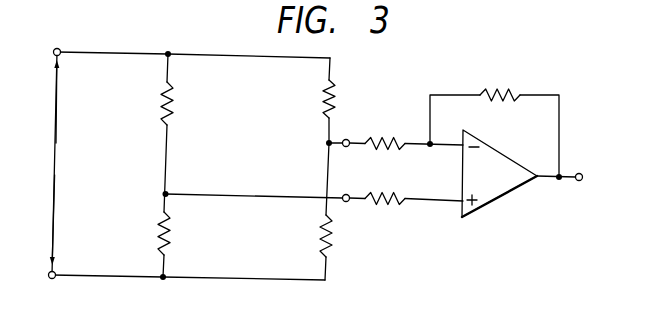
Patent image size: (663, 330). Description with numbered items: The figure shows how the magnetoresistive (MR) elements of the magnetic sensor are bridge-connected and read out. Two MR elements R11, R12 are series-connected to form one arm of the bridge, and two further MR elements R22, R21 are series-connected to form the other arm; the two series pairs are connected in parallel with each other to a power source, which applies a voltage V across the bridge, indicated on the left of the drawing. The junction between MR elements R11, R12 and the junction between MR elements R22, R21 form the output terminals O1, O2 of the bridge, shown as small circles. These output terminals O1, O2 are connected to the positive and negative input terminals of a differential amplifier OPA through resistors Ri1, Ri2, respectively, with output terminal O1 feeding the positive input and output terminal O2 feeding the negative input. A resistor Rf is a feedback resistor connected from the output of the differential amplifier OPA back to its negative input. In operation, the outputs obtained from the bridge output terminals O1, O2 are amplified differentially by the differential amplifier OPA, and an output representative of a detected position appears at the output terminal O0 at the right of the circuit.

The voltage V is at (53, 162).
The MR element R11 is at (151, 103).
The MR element R12 is at (149, 233).
The MR element R22 is at (312, 100).
The MR element R21 is at (311, 237).
The output terminal O2 is at (347, 137).
The output terminal O1 is at (347, 203).
The resistor Ri2 is at (388, 133).
The resistor Ri1 is at (383, 205).
The feedback resistor Rf is at (500, 81).
The differential amplifier OPA is at (495, 200).
The output terminal O0 is at (575, 182).